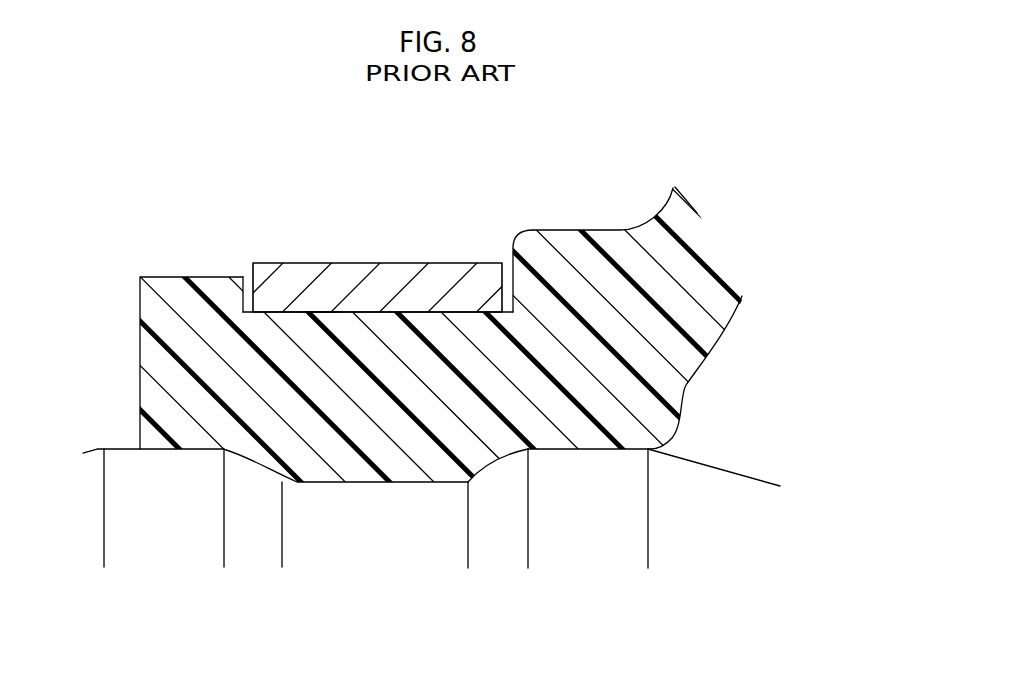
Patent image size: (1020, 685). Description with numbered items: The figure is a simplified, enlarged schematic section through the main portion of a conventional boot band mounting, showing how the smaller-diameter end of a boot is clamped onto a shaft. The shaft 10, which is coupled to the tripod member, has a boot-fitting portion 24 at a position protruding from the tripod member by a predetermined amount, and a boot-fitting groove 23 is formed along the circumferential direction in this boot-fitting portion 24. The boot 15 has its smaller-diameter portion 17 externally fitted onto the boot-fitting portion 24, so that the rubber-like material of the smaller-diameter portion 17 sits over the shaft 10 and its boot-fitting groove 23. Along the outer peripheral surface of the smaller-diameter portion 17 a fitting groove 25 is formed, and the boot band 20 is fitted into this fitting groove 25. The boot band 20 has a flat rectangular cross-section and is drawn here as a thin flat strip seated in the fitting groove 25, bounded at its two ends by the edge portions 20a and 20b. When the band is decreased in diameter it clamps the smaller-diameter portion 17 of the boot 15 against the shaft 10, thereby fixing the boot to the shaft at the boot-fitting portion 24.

The shaft 10 is at (721, 468).
The boot 15 is at (591, 222).
The smaller-diameter portion 17 is at (318, 348).
The boot band 20 is at (446, 260).
The edge portion 20a is at (510, 318).
The edge portion 20b is at (207, 323).
The boot-fitting groove 23 is at (449, 527).
The boot-fitting portion 24 is at (319, 544).
The fitting groove 25 is at (365, 310).